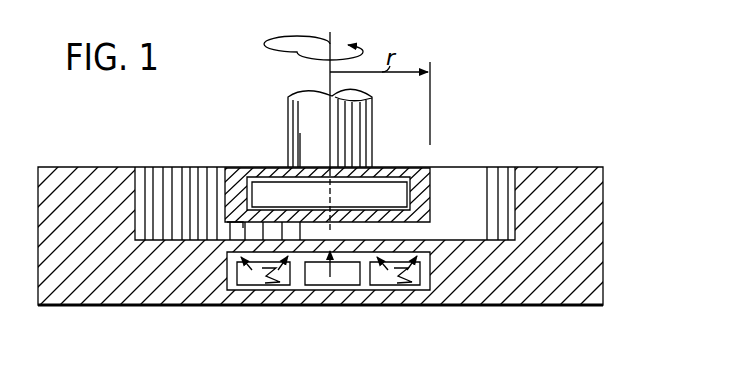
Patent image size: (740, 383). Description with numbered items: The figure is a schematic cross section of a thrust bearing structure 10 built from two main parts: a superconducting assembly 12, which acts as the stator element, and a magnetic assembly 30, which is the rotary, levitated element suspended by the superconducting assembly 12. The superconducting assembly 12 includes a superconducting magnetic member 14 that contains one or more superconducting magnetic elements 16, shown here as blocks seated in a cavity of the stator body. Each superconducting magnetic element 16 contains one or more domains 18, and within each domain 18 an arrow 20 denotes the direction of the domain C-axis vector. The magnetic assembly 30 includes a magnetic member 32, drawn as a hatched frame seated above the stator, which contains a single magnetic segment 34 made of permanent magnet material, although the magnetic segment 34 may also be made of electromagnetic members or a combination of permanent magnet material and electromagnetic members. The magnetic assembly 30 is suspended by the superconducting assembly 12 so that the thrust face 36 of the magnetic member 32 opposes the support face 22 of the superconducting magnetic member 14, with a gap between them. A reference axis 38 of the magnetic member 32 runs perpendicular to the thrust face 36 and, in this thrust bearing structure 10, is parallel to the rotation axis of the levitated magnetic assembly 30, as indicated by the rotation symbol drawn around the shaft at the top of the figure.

The thrust bearing structure 10 is at (562, 106).
The superconducting assembly 12 is at (603, 260).
The superconducting magnetic member 14 is at (214, 304).
The superconducting magnetic element 16 is at (280, 272).
The domain 18 is at (252, 280).
The arrow 20 is at (280, 268).
The support face 22 is at (400, 242).
The magnetic assembly 30 is at (288, 106).
The magnetic member 32 is at (262, 190).
The magnetic segment 34 is at (387, 193).
The thrust face 36 is at (243, 224).
The reference axis 38 is at (330, 36).